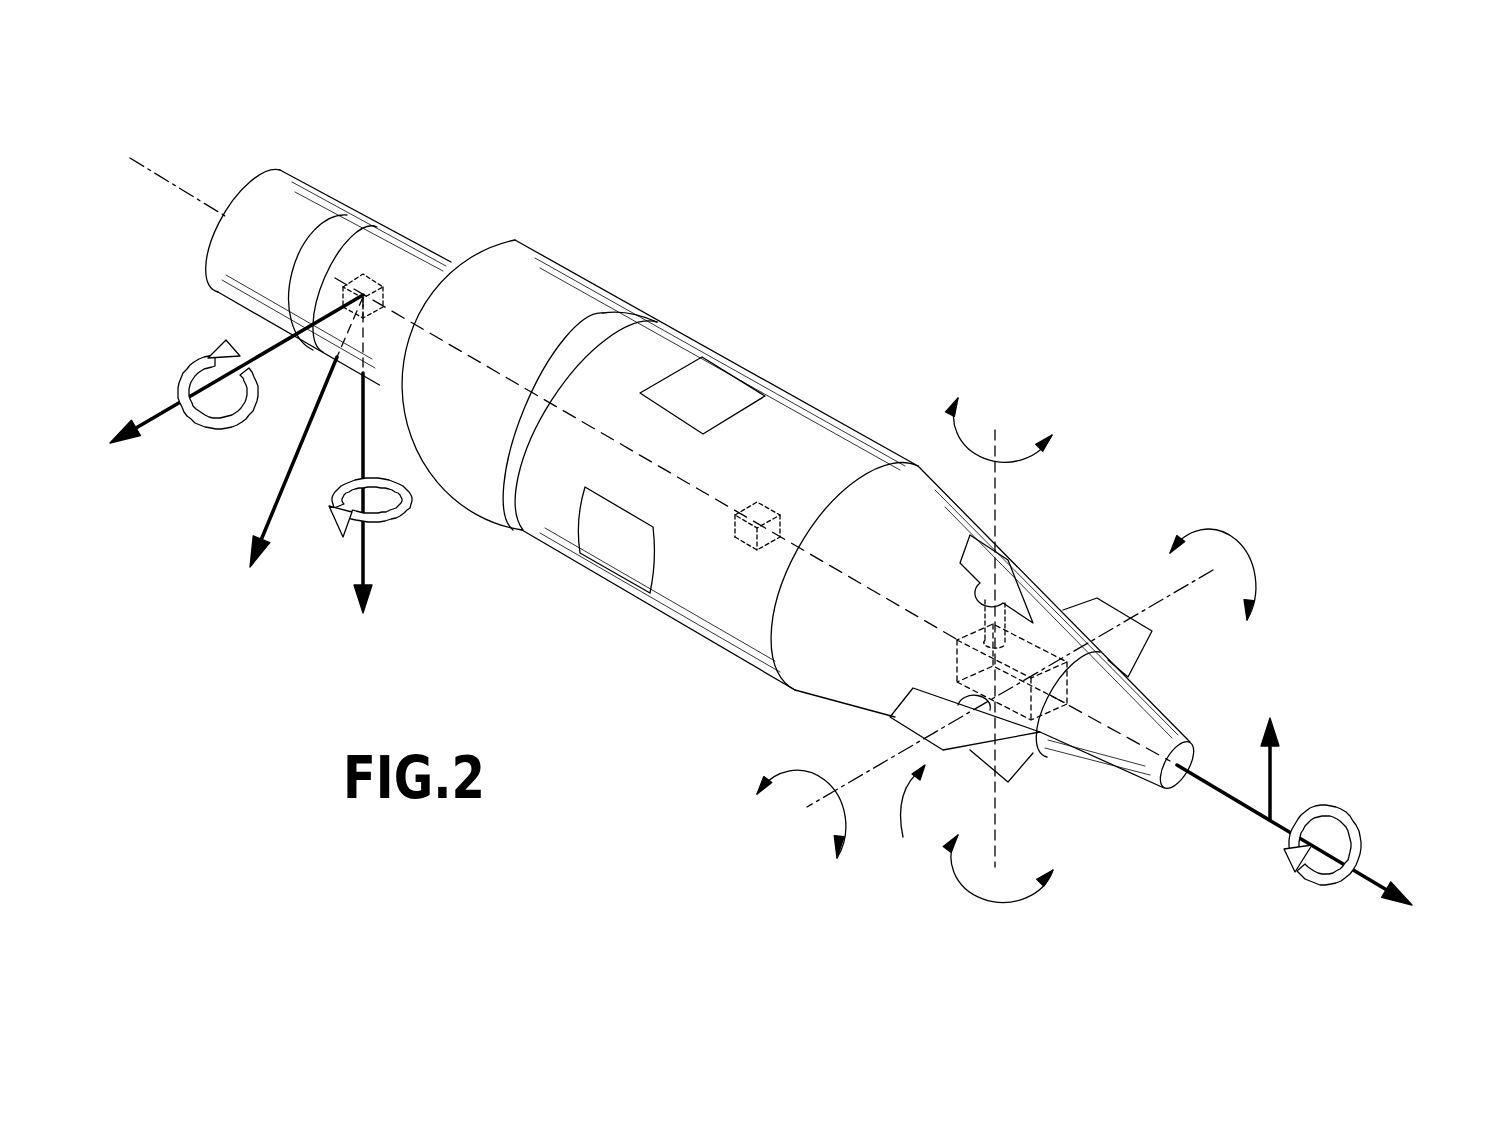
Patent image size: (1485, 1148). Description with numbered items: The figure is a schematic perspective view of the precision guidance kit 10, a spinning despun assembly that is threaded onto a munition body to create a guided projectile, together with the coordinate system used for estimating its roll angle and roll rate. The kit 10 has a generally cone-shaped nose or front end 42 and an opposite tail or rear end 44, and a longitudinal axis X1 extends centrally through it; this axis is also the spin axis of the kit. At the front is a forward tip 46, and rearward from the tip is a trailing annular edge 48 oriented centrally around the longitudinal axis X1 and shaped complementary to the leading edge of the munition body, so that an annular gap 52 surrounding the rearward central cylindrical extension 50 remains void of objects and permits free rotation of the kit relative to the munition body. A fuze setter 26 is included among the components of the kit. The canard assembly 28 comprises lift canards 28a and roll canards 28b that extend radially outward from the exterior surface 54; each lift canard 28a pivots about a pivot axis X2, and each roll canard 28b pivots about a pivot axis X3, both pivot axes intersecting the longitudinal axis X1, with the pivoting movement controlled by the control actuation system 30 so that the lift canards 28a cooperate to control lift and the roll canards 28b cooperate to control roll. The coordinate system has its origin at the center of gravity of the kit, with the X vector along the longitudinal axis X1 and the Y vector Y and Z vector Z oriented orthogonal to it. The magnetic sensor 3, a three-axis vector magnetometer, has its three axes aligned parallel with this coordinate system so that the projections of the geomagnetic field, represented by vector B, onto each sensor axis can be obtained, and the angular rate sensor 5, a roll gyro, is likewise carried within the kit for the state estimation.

The magnetic sensor 3 is at (360, 280).
The angular rate sensor 5 is at (748, 532).
The precision guidance kit 10 is at (968, 350).
The fuze setter 26 is at (1172, 714).
The canard assembly 28 is at (1248, 865).
The lift canard 28a is at (1103, 613).
The roll canard 28b is at (968, 548).
The control actuation system 30 is at (950, 655).
The front end 42 is at (1190, 792).
The rear end 44 is at (227, 190).
The forward tip 46 is at (1190, 762).
The annular edge 48 is at (570, 357).
The central cylindrical extension 50 is at (332, 178).
The gap 52 is at (602, 312).
The exterior surface 54 is at (810, 474).
The longitudinal axis X1 is at (177, 190).
The pivot axis of lift canard X2 is at (1175, 598).
The pivot axis of roll canard X3 is at (997, 488).
The Y vector Y is at (153, 407).
The Z vector Z is at (362, 577).
The geomagnetic field vector B is at (268, 513).